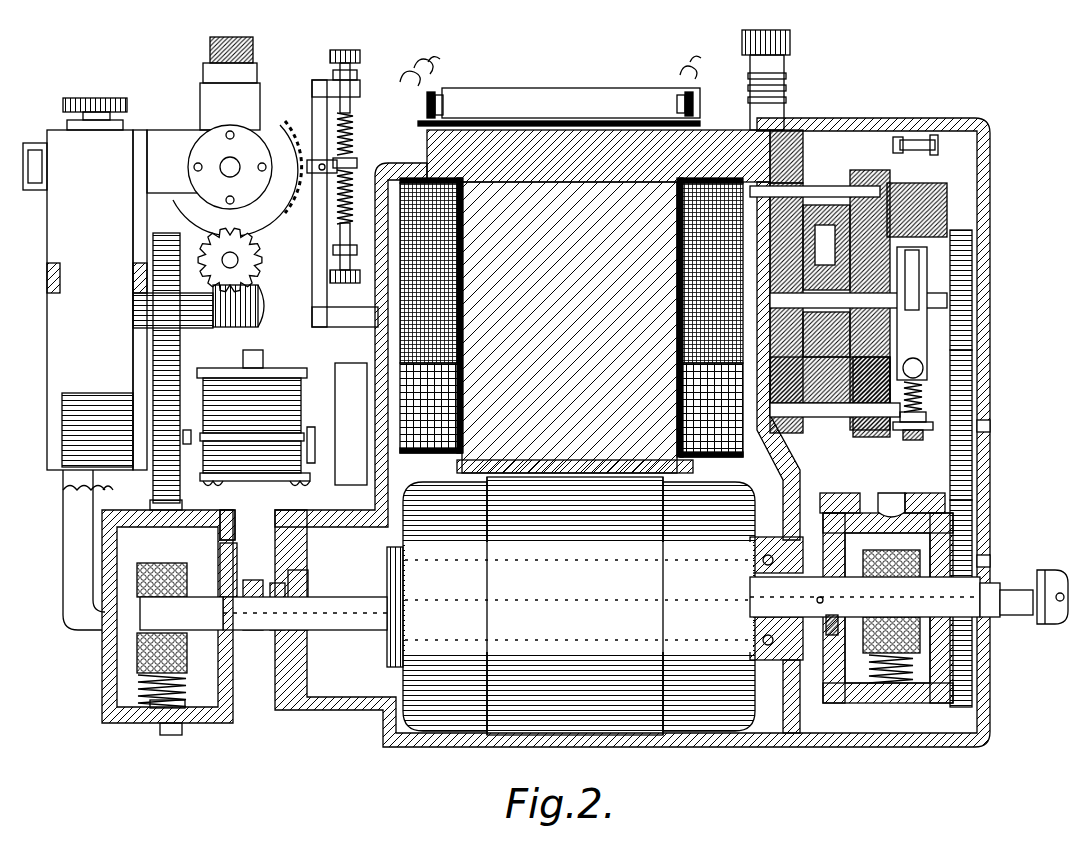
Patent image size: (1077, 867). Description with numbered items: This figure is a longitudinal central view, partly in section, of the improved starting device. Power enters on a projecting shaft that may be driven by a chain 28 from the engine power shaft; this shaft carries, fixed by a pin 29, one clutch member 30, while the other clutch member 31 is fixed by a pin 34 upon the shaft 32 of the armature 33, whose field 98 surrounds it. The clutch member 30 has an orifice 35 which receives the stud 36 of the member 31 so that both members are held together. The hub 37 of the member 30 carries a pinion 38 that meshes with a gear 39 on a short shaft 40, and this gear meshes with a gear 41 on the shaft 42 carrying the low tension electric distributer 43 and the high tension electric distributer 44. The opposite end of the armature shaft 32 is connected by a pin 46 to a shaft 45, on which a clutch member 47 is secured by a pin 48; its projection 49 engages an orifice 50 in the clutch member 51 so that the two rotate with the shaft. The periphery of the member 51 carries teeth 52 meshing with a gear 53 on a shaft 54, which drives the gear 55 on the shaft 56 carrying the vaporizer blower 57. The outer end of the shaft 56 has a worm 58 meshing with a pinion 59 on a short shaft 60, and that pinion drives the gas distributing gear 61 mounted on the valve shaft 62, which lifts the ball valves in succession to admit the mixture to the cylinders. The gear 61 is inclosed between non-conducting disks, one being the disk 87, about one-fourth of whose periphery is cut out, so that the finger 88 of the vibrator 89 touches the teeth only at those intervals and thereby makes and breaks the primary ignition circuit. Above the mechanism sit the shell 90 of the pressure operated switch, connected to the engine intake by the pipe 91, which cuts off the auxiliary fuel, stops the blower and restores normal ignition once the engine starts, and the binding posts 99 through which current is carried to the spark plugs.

The chain 28 is at (1015, 585).
The pin 29 is at (990, 600).
The clutch member 30 is at (843, 496).
The clutch member 31 is at (885, 682).
The armature shaft 32 is at (830, 690).
The armature 33 is at (848, 690).
The pin 34 is at (820, 598).
The orifice 35 is at (912, 505).
The stud 36 is at (890, 496).
The hub 37 is at (990, 640).
The pinion 38 is at (970, 530).
The gear 39 is at (962, 402).
The short shaft 40 is at (985, 425).
The gear 41 is at (960, 332).
The shaft 42 is at (950, 298).
The low tension electric distributer 43 is at (915, 345).
The high tension electric distributer 44 is at (840, 230).
The shaft 45 is at (250, 632).
The pin 46 is at (262, 590).
The clutch member 47 is at (232, 518).
The pin 48 is at (240, 556).
The projection 49 is at (152, 700).
The orifice 50 is at (163, 708).
The clutch member 51 is at (218, 722).
The teeth 52 is at (185, 503).
The gear 53 is at (165, 485).
The shaft 54 is at (190, 442).
The gear 55 is at (180, 363).
The shaft 56 is at (244, 360).
The vaporizer blower 57 is at (75, 238).
The worm 58 is at (258, 295).
The pinion 59 is at (258, 258).
The short shaft 60 is at (238, 255).
The gas distributing gear 61 is at (278, 205).
The valve shaft 62 is at (242, 160).
The disk 87 is at (215, 125).
The finger 88 is at (300, 162).
The vibrator 89 is at (355, 145).
The shell 90 is at (258, 385).
The pipe 91 is at (312, 440).
The field 98 is at (569, 327).
The binding posts 99 is at (445, 92).